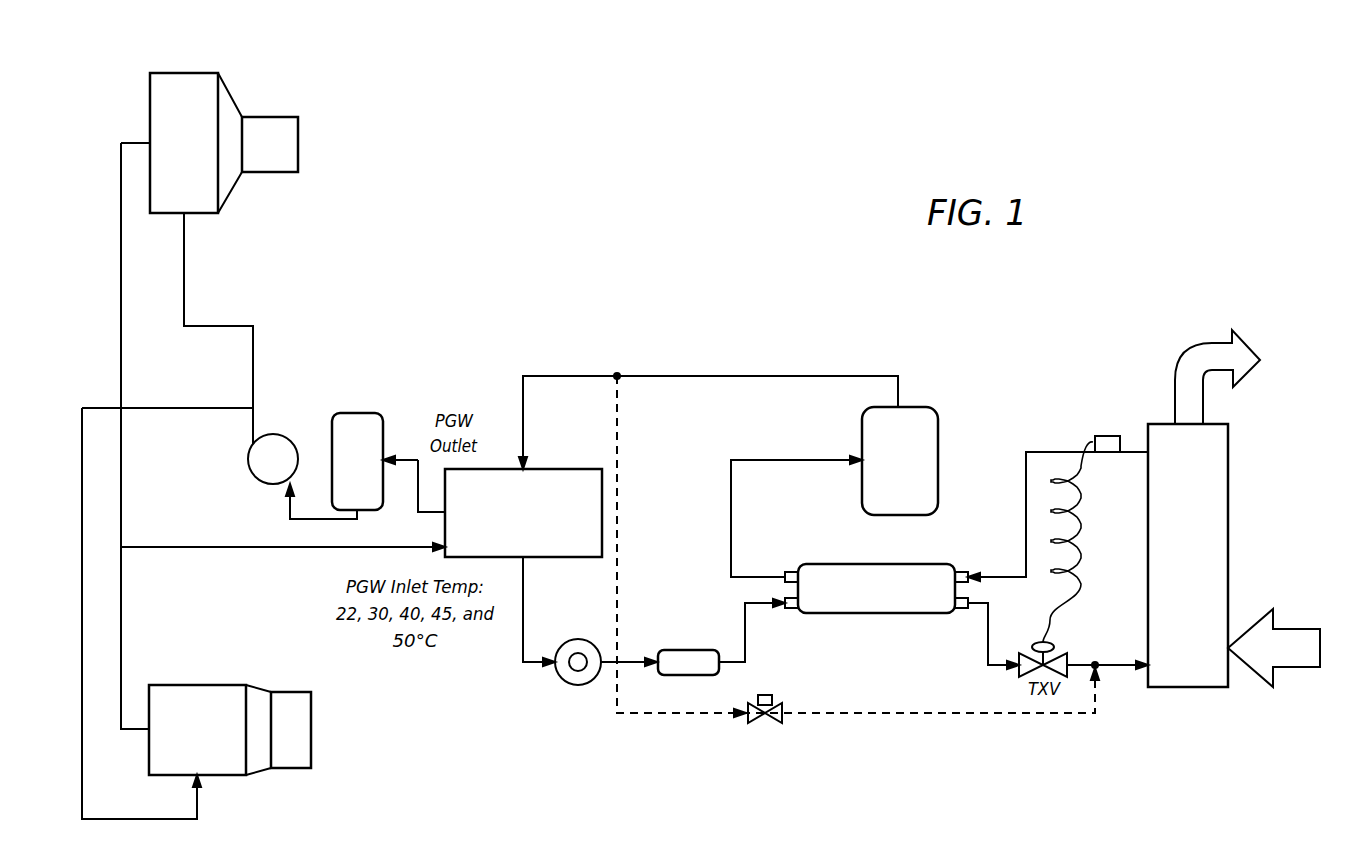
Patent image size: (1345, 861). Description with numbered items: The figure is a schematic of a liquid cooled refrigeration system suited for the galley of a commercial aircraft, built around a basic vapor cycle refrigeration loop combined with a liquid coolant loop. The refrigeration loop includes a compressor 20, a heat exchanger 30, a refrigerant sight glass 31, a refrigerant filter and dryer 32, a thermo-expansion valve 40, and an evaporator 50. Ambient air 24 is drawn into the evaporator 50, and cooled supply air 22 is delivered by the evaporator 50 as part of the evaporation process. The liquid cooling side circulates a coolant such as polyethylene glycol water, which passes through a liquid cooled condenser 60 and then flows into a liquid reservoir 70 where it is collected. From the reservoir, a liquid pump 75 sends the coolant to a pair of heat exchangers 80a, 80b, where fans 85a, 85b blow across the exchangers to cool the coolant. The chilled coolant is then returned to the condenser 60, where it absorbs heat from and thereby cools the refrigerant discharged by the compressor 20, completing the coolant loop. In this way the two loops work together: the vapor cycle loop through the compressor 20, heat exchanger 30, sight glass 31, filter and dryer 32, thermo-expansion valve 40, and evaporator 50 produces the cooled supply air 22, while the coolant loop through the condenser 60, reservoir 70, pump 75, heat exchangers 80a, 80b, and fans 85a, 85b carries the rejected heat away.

The heat exchanger 80a is at (180, 73).
The fan 85a is at (270, 117).
The heat exchanger 80b is at (203, 685).
The fan 85b is at (282, 692).
The liquid pump 75 is at (248, 455).
The liquid reservoir 70 is at (332, 435).
The liquid cooled condenser 60 is at (538, 469).
The refrigerant sight glass 31 is at (573, 639).
The refrigerant filter and dryer 32 is at (690, 650).
The heat exchanger 30 is at (847, 613).
The compressor 20 is at (937, 449).
The evaporator 50 is at (1230, 510).
The supply air 22 is at (1217, 342).
The ambient air 24 is at (1290, 629).
The thermo-expansion valve 40 is at (973, 713).